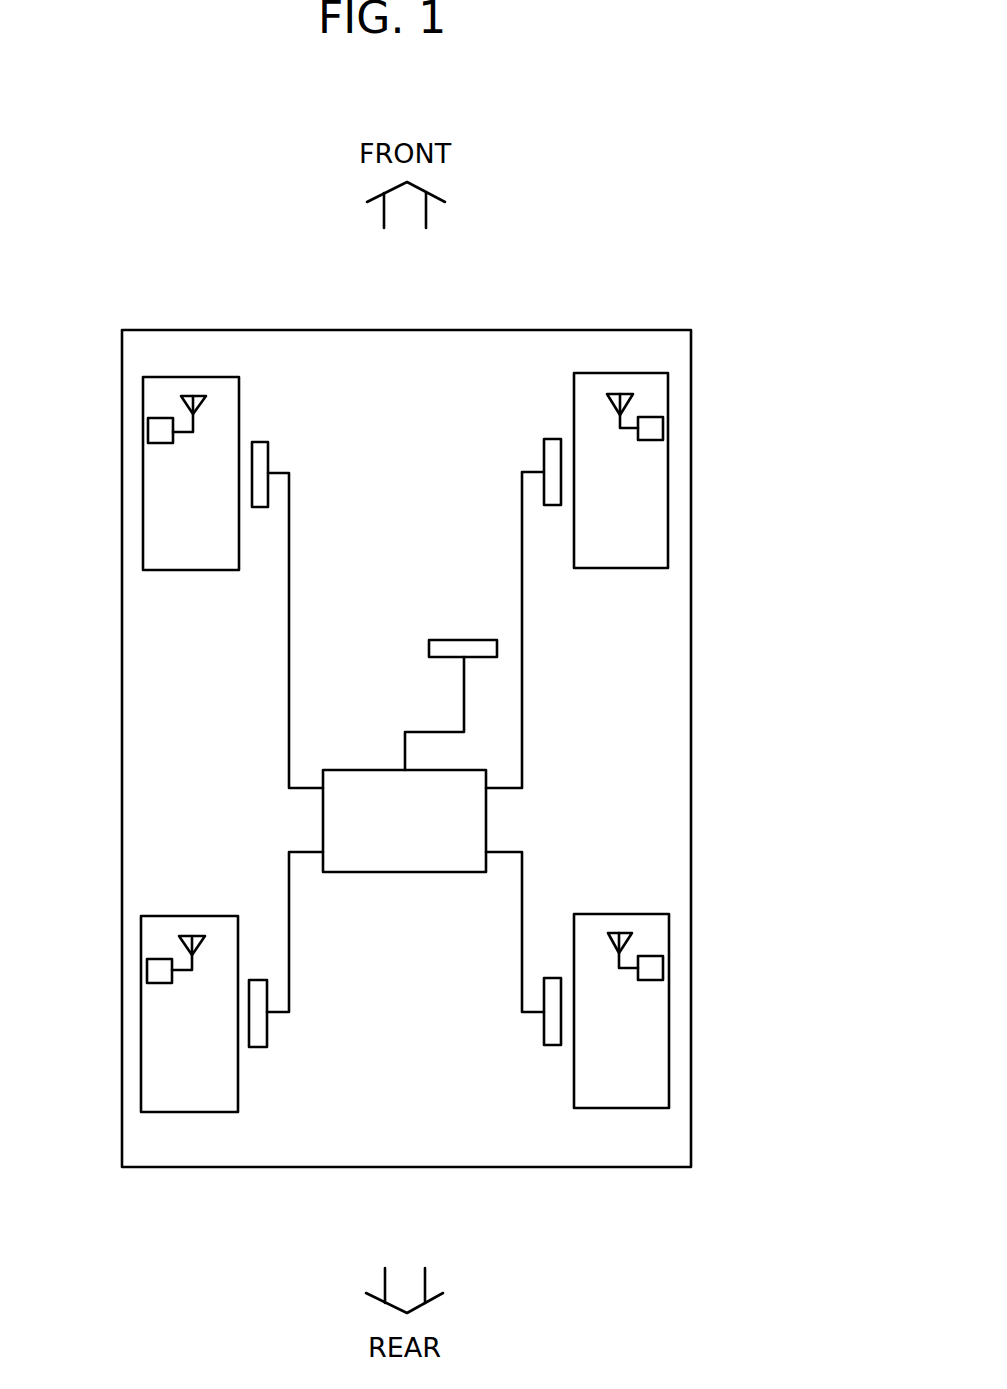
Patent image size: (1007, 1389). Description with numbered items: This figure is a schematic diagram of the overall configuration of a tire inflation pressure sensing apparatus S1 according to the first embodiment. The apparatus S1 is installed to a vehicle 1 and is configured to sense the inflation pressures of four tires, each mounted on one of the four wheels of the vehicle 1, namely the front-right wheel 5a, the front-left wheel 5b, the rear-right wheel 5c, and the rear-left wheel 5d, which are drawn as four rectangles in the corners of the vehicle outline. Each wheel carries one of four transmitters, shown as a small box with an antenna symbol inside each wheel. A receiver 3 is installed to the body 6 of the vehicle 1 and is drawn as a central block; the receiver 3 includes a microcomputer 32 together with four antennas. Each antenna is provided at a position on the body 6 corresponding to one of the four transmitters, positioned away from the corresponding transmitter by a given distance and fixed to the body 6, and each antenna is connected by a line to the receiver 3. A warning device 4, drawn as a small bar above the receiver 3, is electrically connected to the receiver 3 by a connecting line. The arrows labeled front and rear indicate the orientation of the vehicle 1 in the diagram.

The vehicle 1 is at (445, 748).
The receiver 3 is at (407, 863).
The warning device 4 is at (483, 658).
The front-right wheel 5a is at (666, 470).
The front-left wheel 5b is at (153, 473).
The rear-right wheel 5c is at (666, 1011).
The rear-left wheel 5d is at (152, 1014).
The body 6 is at (691, 608).
The microcomputer 32 is at (463, 873).
The tire inflation pressure sensing apparatus S1 is at (810, 231).